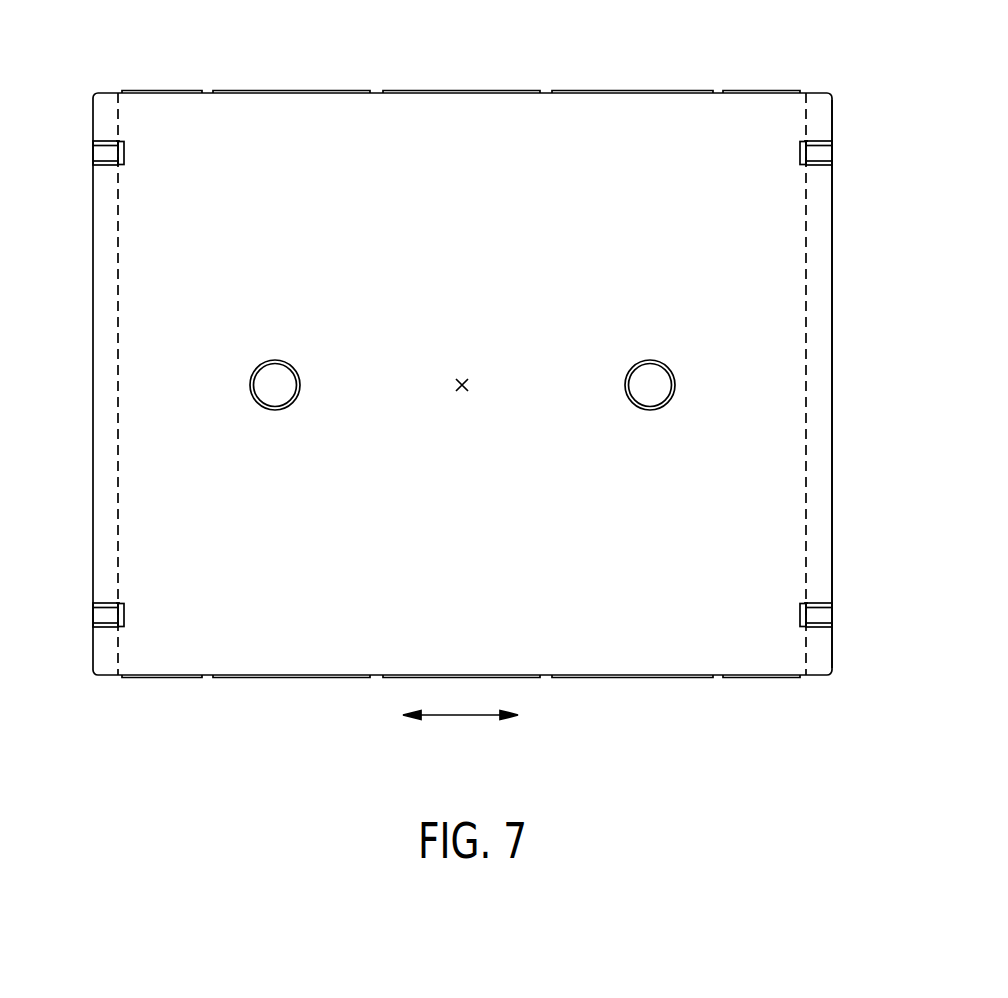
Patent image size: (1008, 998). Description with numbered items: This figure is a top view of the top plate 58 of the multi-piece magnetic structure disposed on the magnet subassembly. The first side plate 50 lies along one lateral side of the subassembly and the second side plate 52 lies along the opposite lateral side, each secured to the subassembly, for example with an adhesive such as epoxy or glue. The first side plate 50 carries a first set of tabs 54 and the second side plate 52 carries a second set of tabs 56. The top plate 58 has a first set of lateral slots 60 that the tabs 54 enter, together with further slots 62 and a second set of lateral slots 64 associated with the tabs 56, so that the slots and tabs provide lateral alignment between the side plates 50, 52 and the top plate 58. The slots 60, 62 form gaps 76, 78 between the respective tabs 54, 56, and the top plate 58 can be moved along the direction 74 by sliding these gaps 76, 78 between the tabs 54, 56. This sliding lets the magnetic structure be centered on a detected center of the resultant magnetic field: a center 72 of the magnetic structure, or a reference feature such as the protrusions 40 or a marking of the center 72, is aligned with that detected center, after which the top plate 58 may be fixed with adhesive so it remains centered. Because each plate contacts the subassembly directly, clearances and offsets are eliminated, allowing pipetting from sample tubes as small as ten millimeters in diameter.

The protrusions 40 is at (276, 361).
The first side plate 50 is at (103, 398).
The second side plate 52 is at (822, 122).
The first set of tabs 54 is at (103, 153).
The second set of tabs 56 is at (822, 154).
The top plate 58 is at (423, 93).
The first set of lateral slots 60 is at (120, 143).
The slots 62 is at (805, 143).
The second set of lateral slots 64 is at (805, 606).
The center 72 is at (461, 380).
The direction 74 is at (460, 715).
The gaps 76 is at (122, 152).
The gaps 78 is at (803, 152).